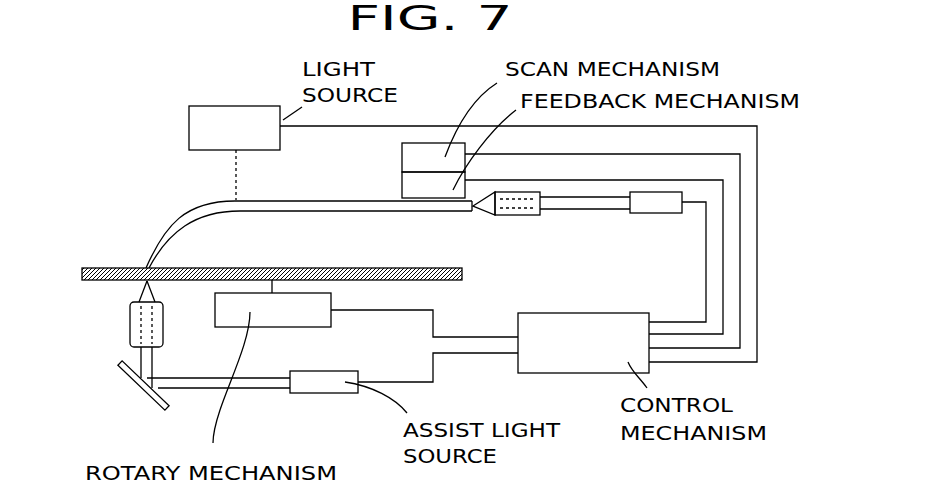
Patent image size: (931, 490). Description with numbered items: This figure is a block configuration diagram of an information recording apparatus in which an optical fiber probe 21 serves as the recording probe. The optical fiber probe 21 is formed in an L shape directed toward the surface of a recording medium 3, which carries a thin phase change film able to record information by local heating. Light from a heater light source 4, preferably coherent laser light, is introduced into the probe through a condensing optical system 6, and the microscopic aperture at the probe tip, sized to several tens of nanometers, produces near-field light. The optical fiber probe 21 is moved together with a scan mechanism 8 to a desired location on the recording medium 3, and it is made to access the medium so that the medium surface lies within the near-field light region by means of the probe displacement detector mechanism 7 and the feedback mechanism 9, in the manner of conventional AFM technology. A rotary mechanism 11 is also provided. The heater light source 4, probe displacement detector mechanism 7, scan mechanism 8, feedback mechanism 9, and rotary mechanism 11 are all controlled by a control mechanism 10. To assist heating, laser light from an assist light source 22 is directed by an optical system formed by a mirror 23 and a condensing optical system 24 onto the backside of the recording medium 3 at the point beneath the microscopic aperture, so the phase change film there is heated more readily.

The recording medium 3 is at (106, 268).
The heater light source 4 is at (657, 213).
The condensing optical system 6 is at (517, 215).
The probe displacement detector mechanism 7 is at (222, 106).
The scan mechanism 8 is at (402, 150).
The feedback mechanism 9 is at (402, 182).
The control mechanism 10 is at (582, 313).
The rotary mechanism 11 is at (305, 327).
The optical fiber probe 21 is at (280, 200).
The assist light source 22 is at (320, 392).
The mirror 23 is at (140, 390).
The condensing optical system 24 is at (130, 322).